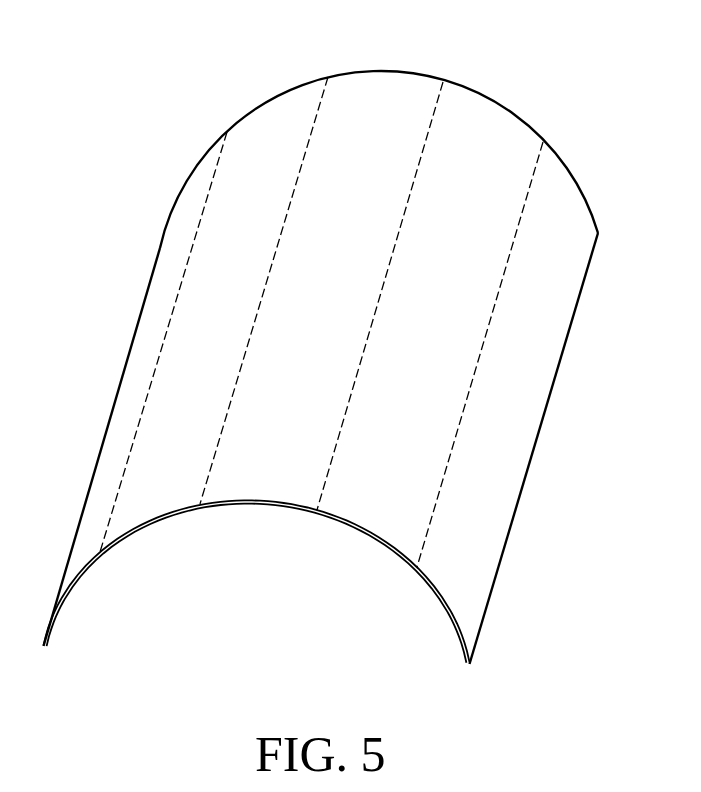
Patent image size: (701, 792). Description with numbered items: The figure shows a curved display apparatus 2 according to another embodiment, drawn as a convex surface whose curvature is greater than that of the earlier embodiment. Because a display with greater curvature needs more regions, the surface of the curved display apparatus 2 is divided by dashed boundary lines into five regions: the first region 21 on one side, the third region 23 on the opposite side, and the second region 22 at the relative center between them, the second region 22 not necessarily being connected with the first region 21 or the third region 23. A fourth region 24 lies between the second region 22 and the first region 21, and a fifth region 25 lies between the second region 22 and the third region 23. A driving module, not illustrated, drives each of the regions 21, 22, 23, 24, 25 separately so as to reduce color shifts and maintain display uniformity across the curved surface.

The curved display apparatus 2 is at (86, 49).
The first region 21 is at (188, 200).
The second region 22 is at (370, 125).
The third region 23 is at (560, 228).
The fourth region 24 is at (264, 145).
The fifth region 25 is at (485, 143).